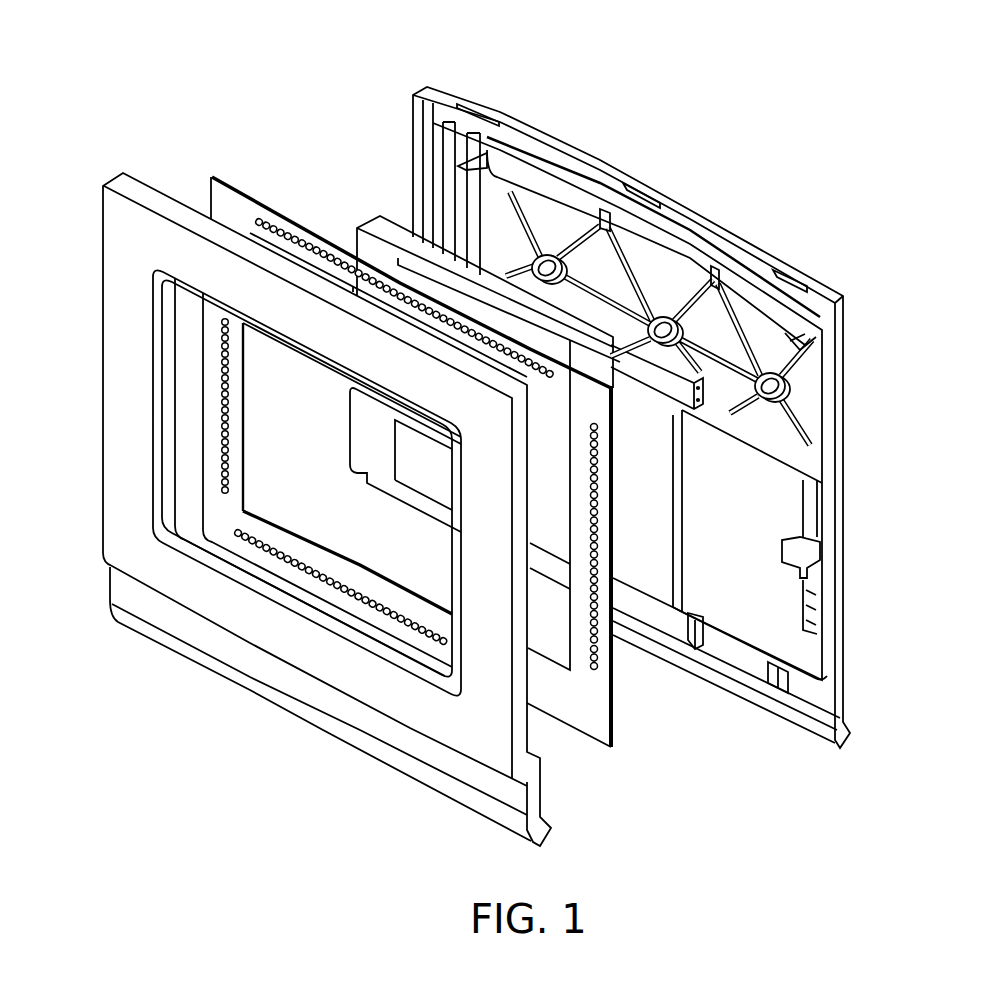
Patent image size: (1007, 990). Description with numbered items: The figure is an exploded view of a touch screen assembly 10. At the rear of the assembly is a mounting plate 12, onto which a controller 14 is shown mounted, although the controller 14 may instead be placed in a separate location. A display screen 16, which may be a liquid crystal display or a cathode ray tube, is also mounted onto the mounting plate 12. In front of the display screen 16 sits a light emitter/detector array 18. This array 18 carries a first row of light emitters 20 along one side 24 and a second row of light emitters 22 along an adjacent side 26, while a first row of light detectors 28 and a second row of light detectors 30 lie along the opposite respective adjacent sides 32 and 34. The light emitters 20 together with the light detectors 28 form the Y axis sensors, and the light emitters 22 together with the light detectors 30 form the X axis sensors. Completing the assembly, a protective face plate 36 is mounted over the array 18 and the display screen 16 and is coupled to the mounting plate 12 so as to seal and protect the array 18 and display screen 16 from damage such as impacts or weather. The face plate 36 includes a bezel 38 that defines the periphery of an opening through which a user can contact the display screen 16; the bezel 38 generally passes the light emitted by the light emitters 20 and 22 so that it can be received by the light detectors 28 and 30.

The touch screen assembly 10 is at (267, 84).
The mounting plate 12 is at (665, 196).
The controller 14 is at (788, 630).
The display screen 16 is at (357, 226).
The light emitter/detector array 18 is at (213, 182).
The first row of light emitters 20 is at (217, 440).
The second row of light emitters 22 is at (364, 598).
The side 24 is at (245, 398).
The side 26 is at (272, 538).
The first row of light detectors 28 is at (598, 670).
The second row of light detectors 30 is at (261, 222).
The side 32 is at (606, 515).
The side 34 is at (288, 247).
The protective face plate 36 is at (120, 284).
The bezel 38 is at (170, 508).